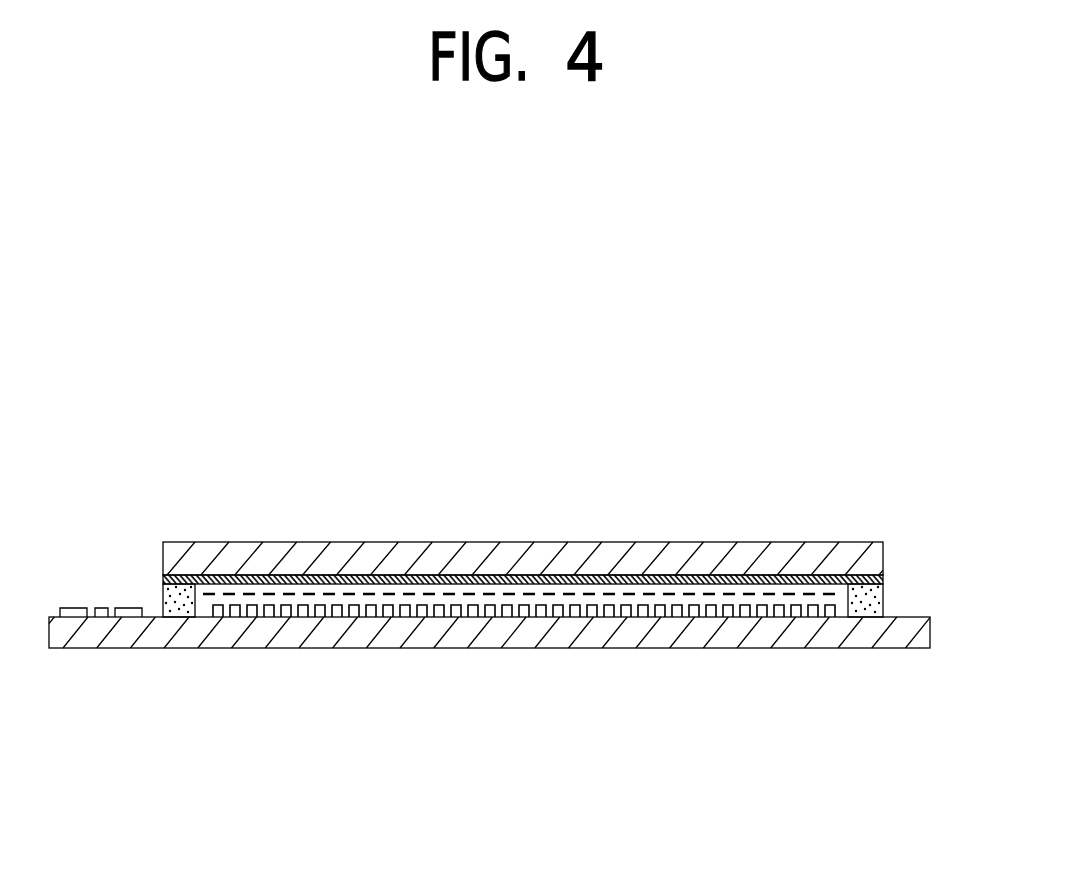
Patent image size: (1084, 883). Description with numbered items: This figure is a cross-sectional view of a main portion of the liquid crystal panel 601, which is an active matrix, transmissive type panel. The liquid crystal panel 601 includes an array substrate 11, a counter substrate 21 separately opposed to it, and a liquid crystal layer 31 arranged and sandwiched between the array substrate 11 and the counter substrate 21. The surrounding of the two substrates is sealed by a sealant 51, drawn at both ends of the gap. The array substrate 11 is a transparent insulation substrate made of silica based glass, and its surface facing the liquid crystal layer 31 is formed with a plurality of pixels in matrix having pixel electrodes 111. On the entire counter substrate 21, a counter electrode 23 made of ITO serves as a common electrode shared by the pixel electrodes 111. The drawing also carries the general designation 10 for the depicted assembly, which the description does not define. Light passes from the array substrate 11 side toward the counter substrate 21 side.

The liquid crystal panel 601 is at (541, 400).
The lid assembly 10 is at (872, 512).
The array substrate 11 is at (762, 637).
The pixel electrode 111 is at (660, 615).
The counter substrate 21 is at (624, 553).
The counter electrode 23 is at (883, 578).
The liquid crystal layer 31 is at (433, 597).
The sealant 51 is at (163, 594).